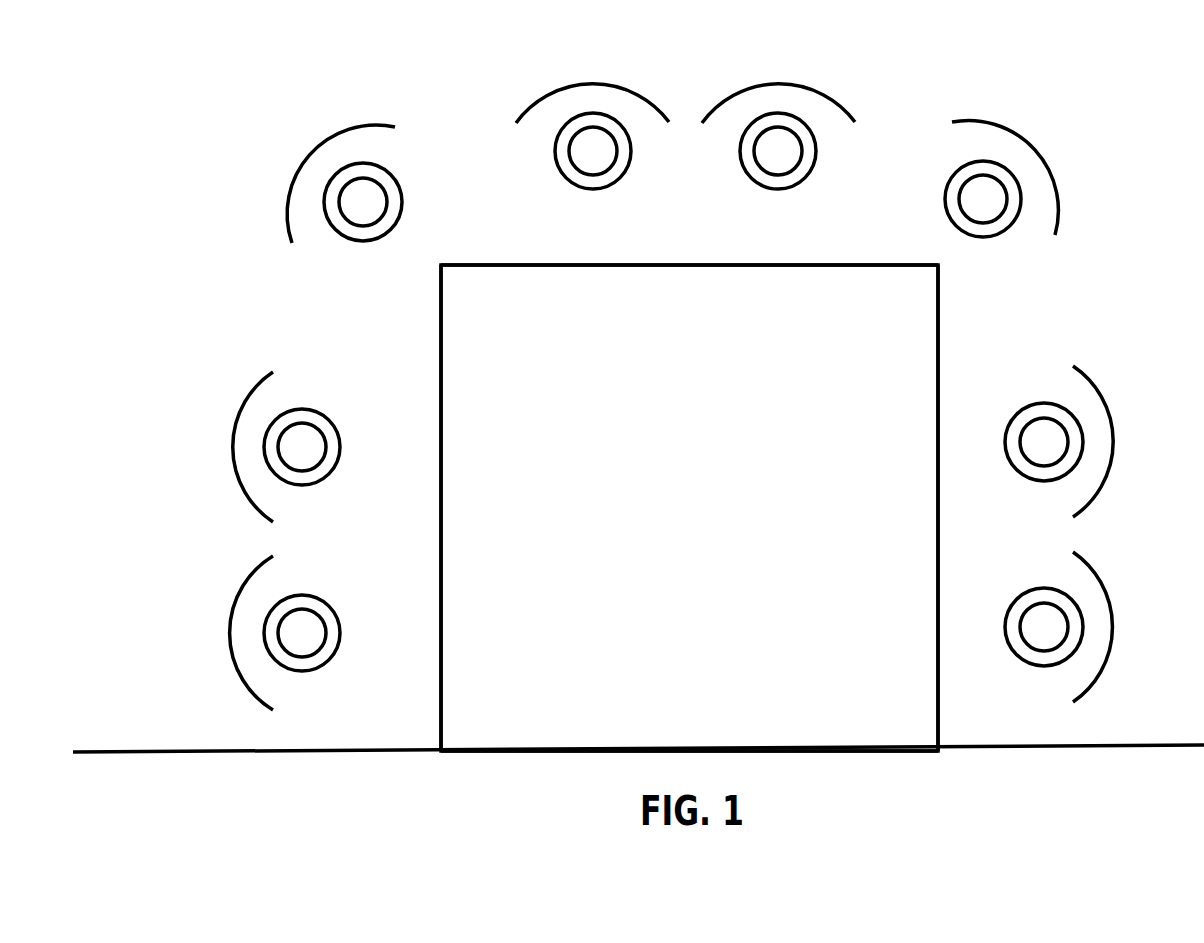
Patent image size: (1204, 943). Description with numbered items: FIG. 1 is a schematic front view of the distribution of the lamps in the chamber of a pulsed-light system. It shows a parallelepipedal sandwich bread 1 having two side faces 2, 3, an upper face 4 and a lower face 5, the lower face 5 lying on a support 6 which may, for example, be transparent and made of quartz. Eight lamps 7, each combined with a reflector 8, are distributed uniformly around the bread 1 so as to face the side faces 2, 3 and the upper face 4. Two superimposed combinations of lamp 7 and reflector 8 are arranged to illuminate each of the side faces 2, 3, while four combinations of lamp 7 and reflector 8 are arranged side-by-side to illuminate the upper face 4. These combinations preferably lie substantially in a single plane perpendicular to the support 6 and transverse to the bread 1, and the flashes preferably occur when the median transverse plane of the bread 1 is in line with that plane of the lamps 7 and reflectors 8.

The sandwich bread 1 is at (950, 337).
The side face 2 is at (938, 531).
The side face 3 is at (441, 536).
The upper face 4 is at (675, 265).
The lower face 5 is at (541, 752).
The support 6 is at (170, 750).
The lamp 7 is at (363, 241).
The reflector 8 is at (283, 232).